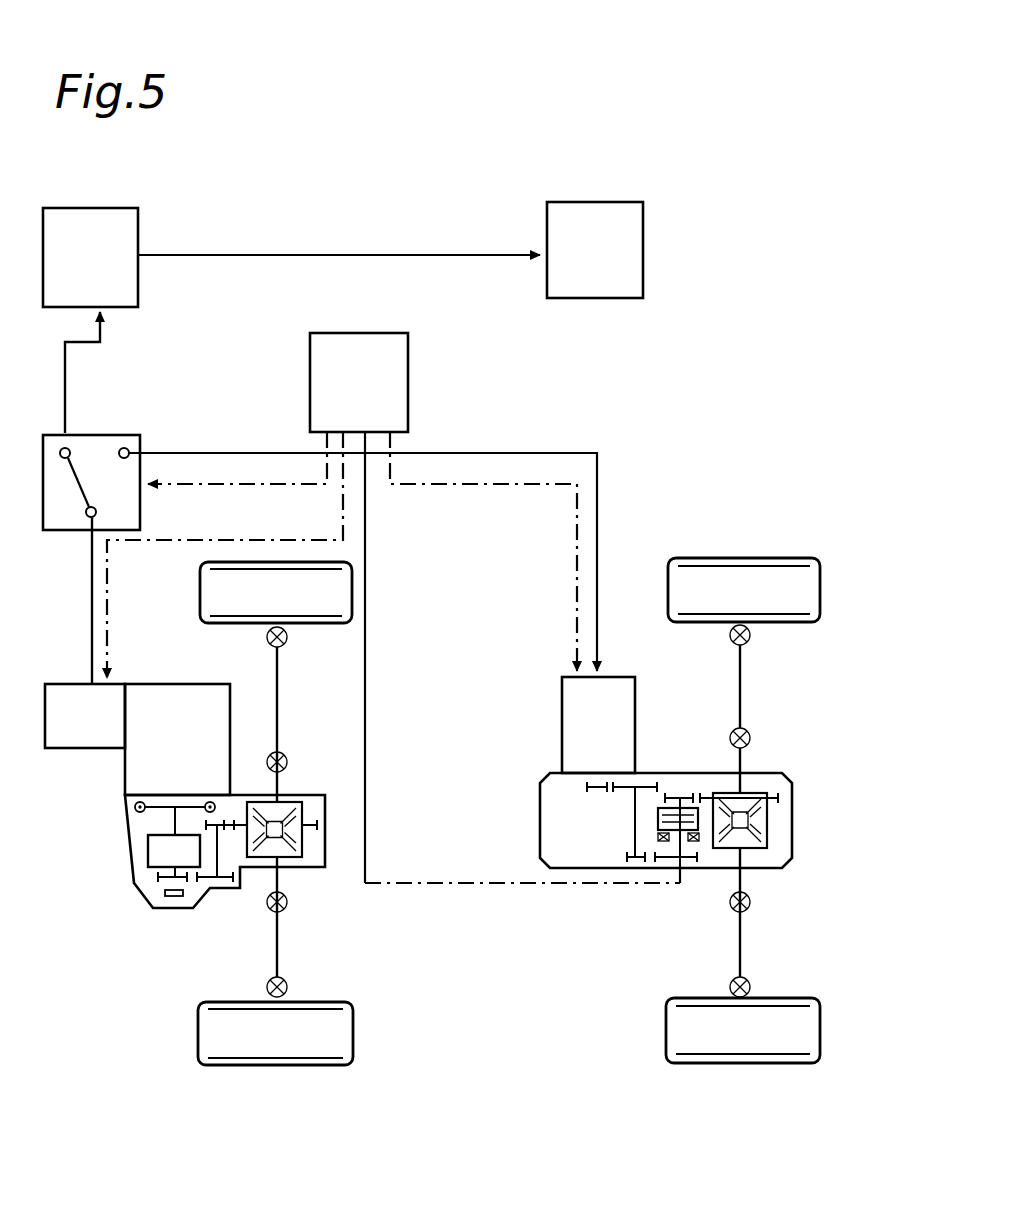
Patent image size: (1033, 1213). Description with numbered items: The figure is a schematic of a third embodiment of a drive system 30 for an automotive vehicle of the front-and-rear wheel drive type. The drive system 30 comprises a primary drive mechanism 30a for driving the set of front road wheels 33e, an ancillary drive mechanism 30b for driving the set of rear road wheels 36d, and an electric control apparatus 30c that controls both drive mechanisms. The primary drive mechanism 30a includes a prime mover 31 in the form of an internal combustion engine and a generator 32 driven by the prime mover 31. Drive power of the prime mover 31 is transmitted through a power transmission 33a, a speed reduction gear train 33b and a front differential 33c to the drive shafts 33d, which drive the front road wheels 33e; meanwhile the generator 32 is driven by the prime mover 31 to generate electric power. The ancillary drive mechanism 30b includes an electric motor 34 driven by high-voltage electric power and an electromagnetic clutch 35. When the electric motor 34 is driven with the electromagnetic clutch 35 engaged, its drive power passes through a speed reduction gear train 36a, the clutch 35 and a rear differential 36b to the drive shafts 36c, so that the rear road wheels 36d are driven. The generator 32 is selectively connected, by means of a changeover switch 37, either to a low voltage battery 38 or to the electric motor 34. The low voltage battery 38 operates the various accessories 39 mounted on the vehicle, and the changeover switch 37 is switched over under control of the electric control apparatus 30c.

The drive system 30 is at (482, 1012).
The primary drive mechanism 30a is at (126, 888).
The ancillary drive mechanism 30b is at (802, 826).
The electric control apparatus 30c is at (382, 394).
The prime mover 31 is at (163, 690).
The generator 32 is at (66, 749).
The power transmission 33a is at (155, 854).
The speed reduction gear train 33b is at (193, 885).
The front differential 33c is at (283, 800).
The drive shafts 33d is at (277, 698).
The front road wheels 33e is at (208, 580).
The electric motor 34 is at (573, 708).
The electromagnetic clutch 35 is at (693, 862).
The speed reduction gear train 36a is at (633, 782).
The rear differential 36b is at (774, 778).
The drive shafts 36c is at (741, 676).
The rear road wheels 36d is at (732, 576).
The changeover switch 37 is at (104, 434).
The low voltage battery 38 is at (99, 268).
The accessories 39 is at (598, 163).